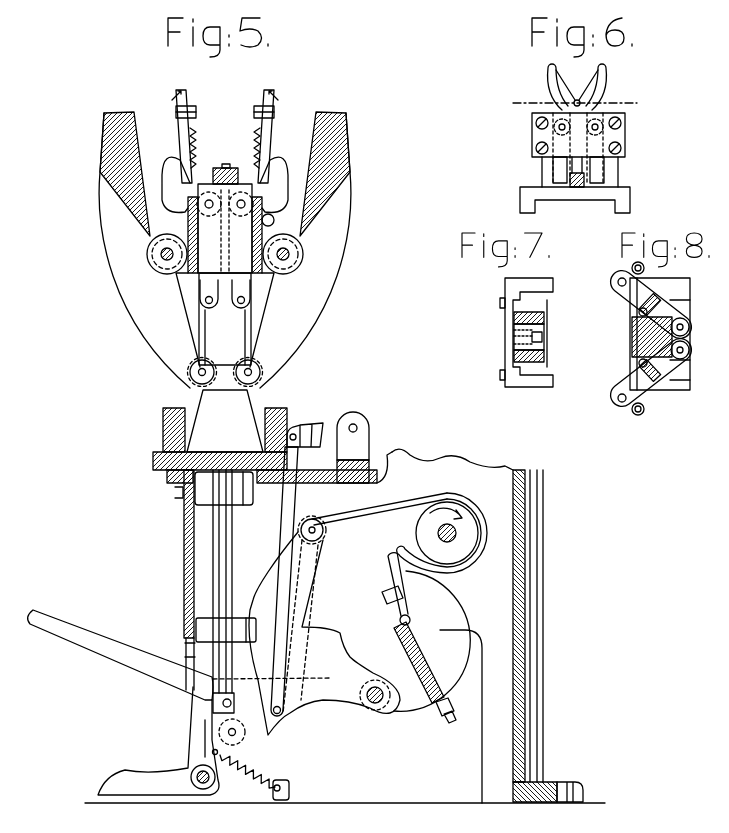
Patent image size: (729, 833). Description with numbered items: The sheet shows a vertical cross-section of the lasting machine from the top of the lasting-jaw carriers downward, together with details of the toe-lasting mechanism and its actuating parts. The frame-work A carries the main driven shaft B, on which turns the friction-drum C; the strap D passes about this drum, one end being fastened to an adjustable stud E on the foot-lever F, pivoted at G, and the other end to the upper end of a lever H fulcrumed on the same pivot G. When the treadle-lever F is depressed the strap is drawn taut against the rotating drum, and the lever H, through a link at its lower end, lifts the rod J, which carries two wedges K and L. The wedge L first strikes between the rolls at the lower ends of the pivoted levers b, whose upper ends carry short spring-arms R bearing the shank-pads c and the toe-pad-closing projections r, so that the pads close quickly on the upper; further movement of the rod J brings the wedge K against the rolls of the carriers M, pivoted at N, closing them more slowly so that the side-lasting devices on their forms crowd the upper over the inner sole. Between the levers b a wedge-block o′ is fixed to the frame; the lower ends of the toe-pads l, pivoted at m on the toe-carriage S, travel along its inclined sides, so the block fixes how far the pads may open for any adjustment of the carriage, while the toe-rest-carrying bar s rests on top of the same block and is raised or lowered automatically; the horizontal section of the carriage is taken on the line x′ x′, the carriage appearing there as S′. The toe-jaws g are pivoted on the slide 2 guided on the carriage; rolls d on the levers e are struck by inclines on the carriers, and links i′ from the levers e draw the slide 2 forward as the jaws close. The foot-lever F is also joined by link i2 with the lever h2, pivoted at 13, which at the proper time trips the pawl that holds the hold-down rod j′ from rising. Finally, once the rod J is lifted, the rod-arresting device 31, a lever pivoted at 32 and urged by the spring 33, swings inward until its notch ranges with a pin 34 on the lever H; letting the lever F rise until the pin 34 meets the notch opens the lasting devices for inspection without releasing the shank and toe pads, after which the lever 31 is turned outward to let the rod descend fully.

In FIG. 5, the carriers M is at (225, 250).
In FIG. 5, the pivot of carriers N is at (352, 252).
In FIG. 5, the pivoted levers b is at (225, 215).
In FIG. 5, the wedge-block o′ is at (220, 164).
In FIG. 6, the wedge-block o′ is at (576, 187).
In FIG. 5, the short spring-arms R is at (283, 133).
In FIG. 5, the shank-pads c is at (225, 109).
In FIG. 5, the toe-pad-closing arms or projections r is at (224, 126).
In FIG. 5, the toe-pads l is at (225, 294).
In FIG. 6, the toe-pads l is at (577, 85).
In FIG. 7, the toe-pads l is at (514, 358).
In FIG. 5, the wedge L is at (225, 330).
In FIG. 5, the wedge K is at (333, 436).
In FIG. 5, the pivot of lever h2 13 is at (357, 427).
In FIG. 5, the lever h2 is at (306, 425).
In FIG. 5, the link i2 is at (296, 466).
In FIG. 5, the rod J is at (215, 591).
In FIG. 5, the lever H is at (341, 625).
In FIG. 5, the pivot G is at (375, 703).
In FIG. 5, the strap D is at (399, 553).
In FIG. 5, the friction-drum C is at (416, 530).
In FIG. 5, the main driven shaft B is at (452, 539).
In FIG. 5, the adjustable stud E is at (399, 622).
In FIG. 5, the frame-work A is at (545, 572).
In FIG. 5, the foot-lever F is at (123, 702).
In FIG. 5, the pivot of rod-arresting device 32 is at (210, 780).
In FIG. 5, the pin 34 is at (238, 730).
In FIG. 5, the rod-arresting device 31 is at (208, 746).
In FIG. 5, the spring 33 is at (253, 765).
In FIG. 6, the toe-jaws g is at (578, 84).
In FIG. 6, the section line x′ is at (574, 101).
In FIG. 6, the pivot of toe-pads m is at (636, 131).
In FIG. 6, the toe-rest-carrying bar s is at (604, 165).
In FIG. 7, the toe-rest-carrying bar s is at (514, 340).
In FIG. 6, the toe-carriage S is at (569, 195).
In FIG. 7, the toe-carriage S is at (526, 344).
In FIG. 8, the support plate S′ is at (660, 342).
In FIG. 8, the slide 2 is at (637, 340).
In FIG. 8, the levers e is at (651, 338).
In FIG. 8, the rolls d is at (618, 398).
In FIG. 8, the rod j′ is at (702, 352).
In FIG. 8, the links i′ is at (640, 369).